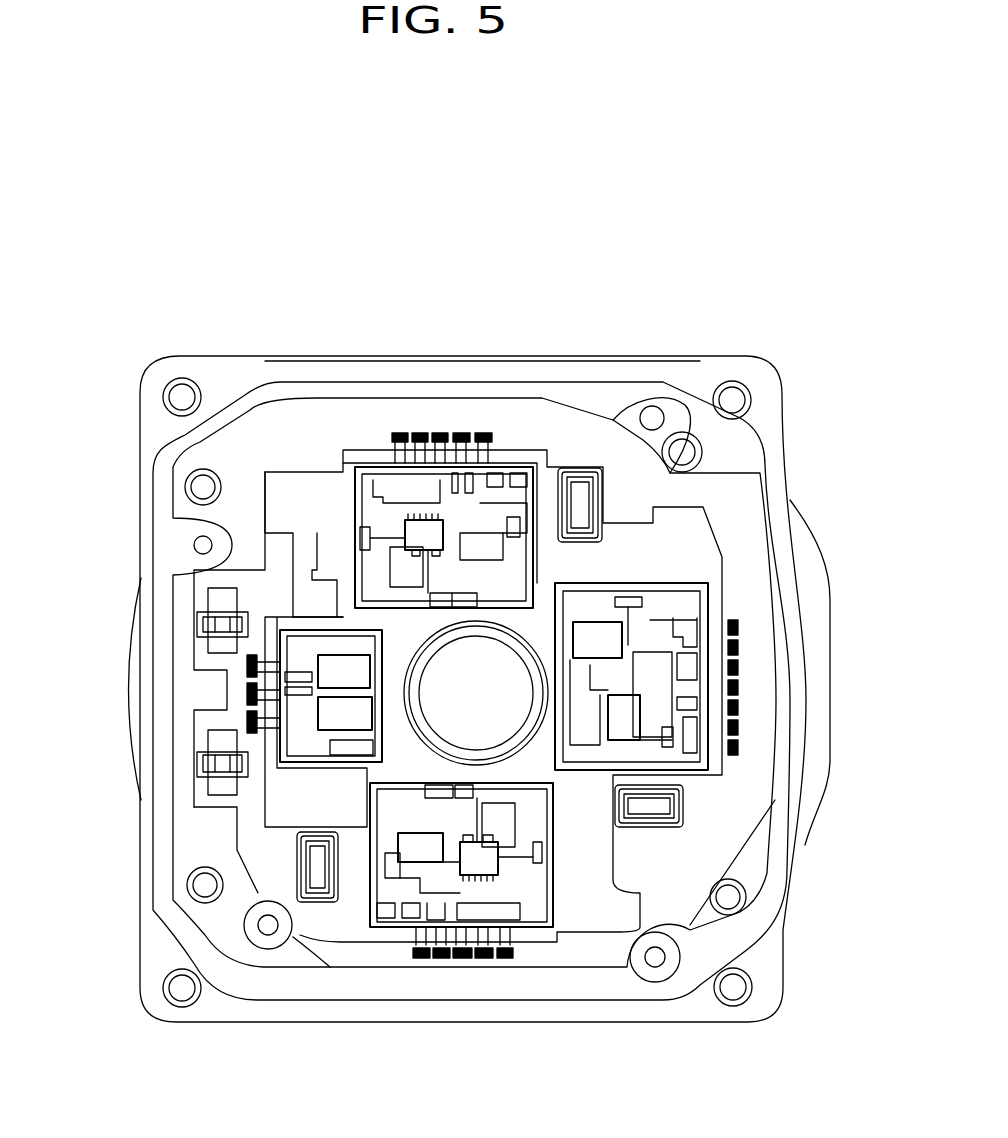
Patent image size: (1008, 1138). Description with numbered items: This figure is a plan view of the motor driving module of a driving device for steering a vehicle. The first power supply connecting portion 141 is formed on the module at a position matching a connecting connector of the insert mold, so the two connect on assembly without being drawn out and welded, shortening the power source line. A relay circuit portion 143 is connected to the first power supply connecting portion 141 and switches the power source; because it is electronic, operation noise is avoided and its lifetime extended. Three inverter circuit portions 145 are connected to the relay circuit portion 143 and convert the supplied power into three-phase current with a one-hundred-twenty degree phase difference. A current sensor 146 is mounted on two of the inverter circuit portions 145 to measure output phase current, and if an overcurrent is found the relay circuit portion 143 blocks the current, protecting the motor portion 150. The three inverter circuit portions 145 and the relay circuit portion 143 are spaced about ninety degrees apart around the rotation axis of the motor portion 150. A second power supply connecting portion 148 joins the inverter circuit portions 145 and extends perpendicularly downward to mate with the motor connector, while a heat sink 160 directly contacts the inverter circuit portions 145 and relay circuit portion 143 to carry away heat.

The first power supply connecting portion 141 is at (210, 626).
The relay circuit portion 143 is at (302, 745).
The inverter circuit portion 145 is at (477, 573).
The current sensor 146 is at (420, 527).
The second power supply connecting portion 148 is at (578, 495).
The motor portion 150 is at (677, 837).
The heat sink 160 is at (215, 998).